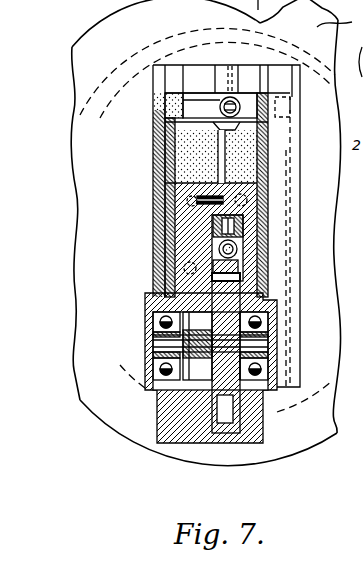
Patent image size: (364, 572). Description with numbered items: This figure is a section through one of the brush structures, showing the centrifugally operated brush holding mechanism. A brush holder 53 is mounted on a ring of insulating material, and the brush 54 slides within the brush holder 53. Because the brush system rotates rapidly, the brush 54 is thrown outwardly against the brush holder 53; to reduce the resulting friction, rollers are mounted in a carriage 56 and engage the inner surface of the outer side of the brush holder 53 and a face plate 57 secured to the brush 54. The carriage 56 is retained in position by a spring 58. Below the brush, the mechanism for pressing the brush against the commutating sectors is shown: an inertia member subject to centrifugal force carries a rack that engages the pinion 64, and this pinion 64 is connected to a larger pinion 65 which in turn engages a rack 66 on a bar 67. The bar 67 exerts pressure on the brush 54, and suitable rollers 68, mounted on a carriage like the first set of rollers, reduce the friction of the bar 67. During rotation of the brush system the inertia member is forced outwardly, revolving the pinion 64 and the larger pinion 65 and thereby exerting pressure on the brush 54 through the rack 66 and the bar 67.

The brush holder 53 is at (190, 75).
The brush 54 is at (188, 173).
The carriage 56 is at (180, 127).
The face plate 57 is at (190, 166).
The spring 58 is at (193, 109).
The pinion 64 is at (205, 366).
The larger pinion 65 is at (228, 410).
The rack 66 is at (255, 280).
The bar 67 is at (242, 249).
The rollers 68 is at (243, 218).